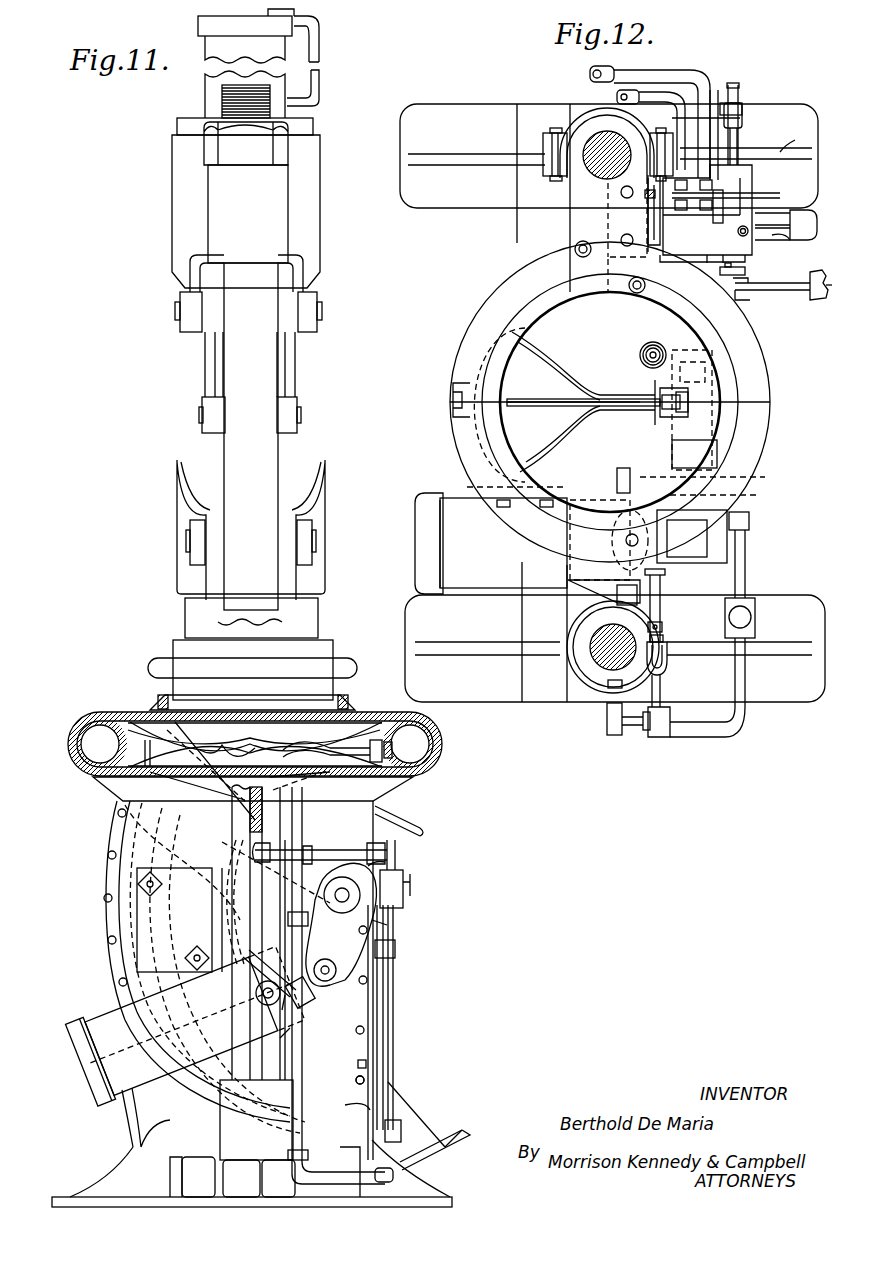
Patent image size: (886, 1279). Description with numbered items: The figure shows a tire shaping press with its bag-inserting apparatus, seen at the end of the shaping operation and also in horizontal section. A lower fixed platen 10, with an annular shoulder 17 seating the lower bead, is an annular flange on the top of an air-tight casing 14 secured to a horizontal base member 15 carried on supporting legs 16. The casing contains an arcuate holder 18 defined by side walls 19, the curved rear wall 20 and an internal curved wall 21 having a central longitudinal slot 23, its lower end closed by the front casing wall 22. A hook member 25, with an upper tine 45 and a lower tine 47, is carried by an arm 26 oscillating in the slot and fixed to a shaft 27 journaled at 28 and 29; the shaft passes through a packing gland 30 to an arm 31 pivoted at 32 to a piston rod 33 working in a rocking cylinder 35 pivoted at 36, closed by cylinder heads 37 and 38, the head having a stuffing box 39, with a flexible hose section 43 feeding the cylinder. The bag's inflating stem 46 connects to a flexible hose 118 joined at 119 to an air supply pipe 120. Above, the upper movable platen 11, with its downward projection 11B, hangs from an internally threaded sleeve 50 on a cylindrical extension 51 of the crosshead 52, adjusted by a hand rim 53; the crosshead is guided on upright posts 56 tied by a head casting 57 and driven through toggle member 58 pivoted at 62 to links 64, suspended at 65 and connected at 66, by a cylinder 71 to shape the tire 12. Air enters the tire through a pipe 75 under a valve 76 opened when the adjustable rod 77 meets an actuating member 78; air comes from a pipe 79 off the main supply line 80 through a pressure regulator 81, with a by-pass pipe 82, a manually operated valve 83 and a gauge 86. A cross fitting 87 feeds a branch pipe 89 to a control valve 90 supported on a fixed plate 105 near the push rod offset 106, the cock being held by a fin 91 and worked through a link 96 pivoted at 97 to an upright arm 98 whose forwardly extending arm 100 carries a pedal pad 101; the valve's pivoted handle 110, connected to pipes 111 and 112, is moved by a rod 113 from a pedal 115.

In FIG. 11, the lower fixed platen 10 is at (160, 780).
In FIG. 12, the lower fixed platen 10 is at (610, 402).
In FIG. 11, the upper movable platen 11 is at (140, 712).
In FIG. 11, the downward projection 11B is at (192, 792).
In FIG. 11, the tire 12 is at (70, 745).
In FIG. 11, the casing 14 is at (112, 840).
In FIG. 11, the base member 15 is at (232, 1170).
In FIG. 12, the base member 15 is at (517, 255).
In FIG. 11, the supporting legs 16 is at (110, 1168).
In FIG. 12, the supporting legs 16 is at (465, 208).
In FIG. 11, the annular shoulder 17 is at (151, 752).
In FIG. 11, the arcuate holder 18 is at (118, 820).
In FIG. 11, the side walls 19 is at (179, 908).
In FIG. 12, the side walls 19 is at (518, 325).
In FIG. 11, the curved rear wall 20 is at (108, 918).
In FIG. 12, the curved rear wall 20 is at (453, 386).
In FIG. 11, the internal curved wall 21 is at (248, 910).
In FIG. 12, the internal curved wall 21 is at (580, 380).
In FIG. 11, the front casing wall 22 is at (395, 946).
In FIG. 11, the central longitudinal slot 23 is at (265, 869).
In FIG. 12, the central longitudinal slot 23 is at (650, 390).
In FIG. 11, the hook member 25 is at (305, 800).
In FIG. 11, the arm 26 is at (325, 848).
In FIG. 12, the arm 26 is at (658, 412).
In FIG. 11, the shaft 27 is at (346, 924).
In FIG. 12, the shaft 27 is at (727, 494).
In FIG. 12, the journal 28 is at (715, 355).
In FIG. 12, the journal 29 is at (722, 455).
In FIG. 12, the packing gland 30 is at (713, 472).
In FIG. 11, the arm 31 is at (383, 972).
In FIG. 12, the arm 31 is at (748, 540).
In FIG. 11, the pivotal connection 32 is at (310, 995).
In FIG. 12, the pivotal connection 32 is at (700, 516).
In FIG. 11, the piston rod 33 is at (305, 1018).
In FIG. 12, the piston rod 33 is at (690, 532).
In FIG. 11, the rocking cylinder 35 is at (105, 1018).
In FIG. 12, the rocking cylinder 35 is at (503, 543).
In FIG. 11, the pivotal support 36 is at (262, 965).
In FIG. 12, the pivotal support 36 is at (585, 598).
In FIG. 11, the cylinder head 37 is at (245, 1022).
In FIG. 12, the cylinder head 37 is at (580, 533).
In FIG. 11, the cylinder head 38 is at (88, 1088).
In FIG. 12, the cylinder head 38 is at (430, 574).
In FIG. 11, the stuffing box 39 is at (271, 1042).
In FIG. 12, the stuffing box 39 is at (633, 478).
In FIG. 11, the flexible hose section 43 is at (122, 1128).
In FIG. 11, the upper tine 45 is at (225, 730).
In FIG. 12, the upper tine 45 is at (552, 395).
In FIG. 11, the inflating stem 46 is at (392, 750).
In FIG. 11, the lower tine 47 is at (210, 752).
In FIG. 12, the lower tine 47 is at (533, 408).
In FIG. 11, the internally threaded sleeve 50 is at (173, 643).
In FIG. 11, the cylindrical extension 51 is at (185, 612).
In FIG. 11, the crosshead 52 is at (177, 571).
In FIG. 11, the hand rim 53 is at (148, 665).
In FIG. 11, the upright posts 56 is at (251, 436).
In FIG. 12, the upright posts 56 is at (598, 172).
In FIG. 11, the head casting 57 is at (246, 205).
In FIG. 11, the toggle member 58 is at (205, 375).
In FIG. 11, the pivot 62 is at (302, 418).
In FIG. 11, the links 64 is at (212, 428).
In FIG. 11, the pivotal suspension 65 is at (175, 310).
In FIG. 11, the pivotal connection 66 is at (314, 545).
In FIG. 11, the cylinder 71 is at (205, 88).
In FIG. 12, the pipe 75 is at (660, 603).
In FIG. 12, the valve 76 is at (668, 662).
In FIG. 12, the adjustable rod 77 is at (662, 628).
In FIG. 12, the actuating member 78 is at (663, 638).
In FIG. 11, the pipe 79 is at (320, 1060).
In FIG. 12, the pipe 79 is at (748, 565).
In FIG. 12, the main supply line 80 is at (740, 92).
In FIG. 11, the pressure regulator 81 is at (382, 1140).
In FIG. 12, the pressure regulator 81 is at (755, 617).
In FIG. 11, the by-pass pipe 82 is at (393, 998).
In FIG. 11, the manually operated valve 83 is at (403, 905).
In FIG. 12, the gauge 86 is at (607, 724).
In FIG. 12, the cross fitting 87 is at (742, 100).
In FIG. 12, the branch pipe 89 is at (738, 140).
In FIG. 12, the control valve 90 is at (715, 190).
In FIG. 12, the fin 91 is at (794, 136).
In FIG. 11, the link 96 is at (360, 1068).
In FIG. 11, the pivotal connection 97 is at (372, 1068).
In FIG. 12, the pivotal connection 97 is at (720, 270).
In FIG. 11, the upright arm 98 is at (344, 1099).
In FIG. 12, the upright arm 98 is at (752, 296).
In FIG. 11, the forwardly extending arm 100 is at (418, 1172).
In FIG. 12, the forwardly extending arm 100 is at (800, 300).
In FIG. 11, the pedal pad 101 is at (470, 1150).
In FIG. 12, the pedal pad 101 is at (822, 302).
In FIG. 12, the fixed plate 105 is at (745, 258).
In FIG. 12, the offset 106 is at (660, 228).
In FIG. 11, the pivoted handle 110 is at (418, 822).
In FIG. 12, the pivoted handle 110 is at (785, 185).
In FIG. 11, the pipe 111 is at (319, 48).
In FIG. 12, the pipe 111 is at (665, 68).
In FIG. 12, the pipe 112 is at (632, 88).
In FIG. 11, the rod 113 is at (435, 1085).
In FIG. 12, the rod 113 is at (778, 238).
In FIG. 11, the pedal 115 is at (462, 1120).
In FIG. 12, the pedal 115 is at (800, 208).
In FIG. 11, the flexible hose 118 is at (283, 750).
In FIG. 12, the flexible hose 118 is at (640, 355).
In FIG. 12, the connection 119 is at (652, 342).
In FIG. 12, the air supply pipe 120 is at (715, 92).